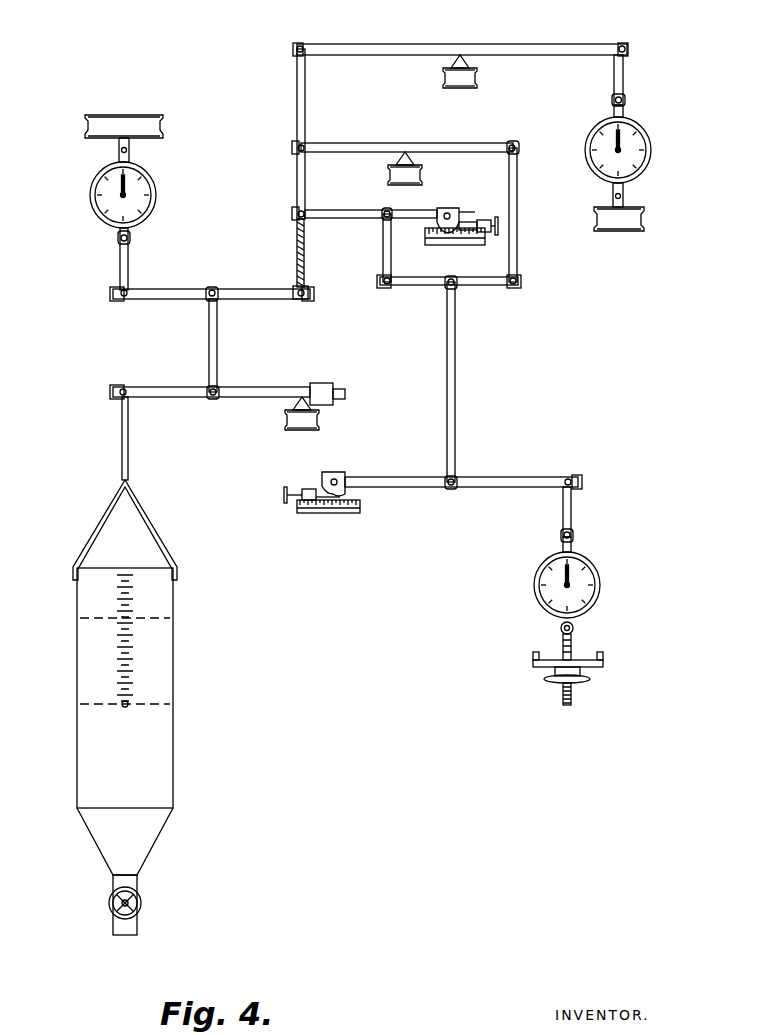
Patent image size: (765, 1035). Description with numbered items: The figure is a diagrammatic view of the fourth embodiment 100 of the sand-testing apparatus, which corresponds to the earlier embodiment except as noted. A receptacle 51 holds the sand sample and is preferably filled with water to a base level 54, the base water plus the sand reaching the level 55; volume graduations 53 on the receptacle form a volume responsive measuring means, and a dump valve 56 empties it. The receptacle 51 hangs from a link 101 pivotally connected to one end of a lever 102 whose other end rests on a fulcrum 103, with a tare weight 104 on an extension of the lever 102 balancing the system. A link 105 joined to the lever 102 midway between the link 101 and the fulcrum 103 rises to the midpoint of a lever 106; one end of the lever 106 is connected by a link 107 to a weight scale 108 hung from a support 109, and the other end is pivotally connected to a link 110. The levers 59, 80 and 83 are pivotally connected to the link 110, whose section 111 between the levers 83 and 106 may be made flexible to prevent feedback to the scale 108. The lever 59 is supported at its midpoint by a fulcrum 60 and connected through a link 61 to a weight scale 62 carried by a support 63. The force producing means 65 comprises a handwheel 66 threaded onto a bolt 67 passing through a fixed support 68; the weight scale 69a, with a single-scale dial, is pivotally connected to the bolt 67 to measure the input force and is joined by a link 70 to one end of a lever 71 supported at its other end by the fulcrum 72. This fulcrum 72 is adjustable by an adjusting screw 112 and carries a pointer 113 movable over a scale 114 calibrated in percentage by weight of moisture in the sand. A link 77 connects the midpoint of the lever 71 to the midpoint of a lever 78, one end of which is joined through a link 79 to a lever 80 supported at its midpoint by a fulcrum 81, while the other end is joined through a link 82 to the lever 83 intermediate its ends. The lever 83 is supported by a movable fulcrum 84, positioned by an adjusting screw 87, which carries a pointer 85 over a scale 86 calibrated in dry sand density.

The receptacle 51 is at (77, 604).
The volume graduations 53 is at (113, 662).
The base level 54 is at (162, 702).
The level of base water plus sand sample 55 is at (162, 617).
The dump valve 56 is at (142, 898).
The lever 59 is at (388, 48).
The fulcrum 60 is at (463, 56).
The link 61 is at (623, 78).
The weight scale 62 is at (651, 148).
The support 63 is at (645, 215).
The force producing means 65 is at (528, 679).
The handwheel 66 is at (582, 683).
The bolt 67 is at (566, 706).
The fixed support 68 is at (604, 663).
The weight scale 69a is at (603, 584).
The link 70 is at (572, 512).
The lever 71 is at (498, 488).
The fulcrum 72 is at (343, 476).
The link 77 is at (456, 431).
The lever 78 is at (490, 286).
The link 79 is at (518, 219).
The lever 80 is at (450, 143).
The fulcrum 81 is at (400, 148).
The link 82 is at (383, 246).
The lever 83 is at (357, 212).
The fulcrum 84 is at (440, 208).
The pointer 85 is at (458, 245).
The scale 86 is at (428, 242).
The adjusting screw 87 is at (478, 222).
The embodiment 100 is at (222, 115).
The link 101 is at (128, 442).
The lever 102 is at (158, 387).
The fulcrum 103 is at (292, 412).
The tare weight 104 is at (323, 383).
The link 105 is at (217, 340).
The lever 106 is at (160, 300).
The link 107 is at (120, 265).
The weight scale 108 is at (92, 207).
The support 109 is at (85, 132).
The link 110 is at (297, 110).
The section 111 is at (297, 248).
The adjusting screw 112 is at (308, 480).
The pointer 113 is at (340, 514).
The scale 114 is at (364, 506).